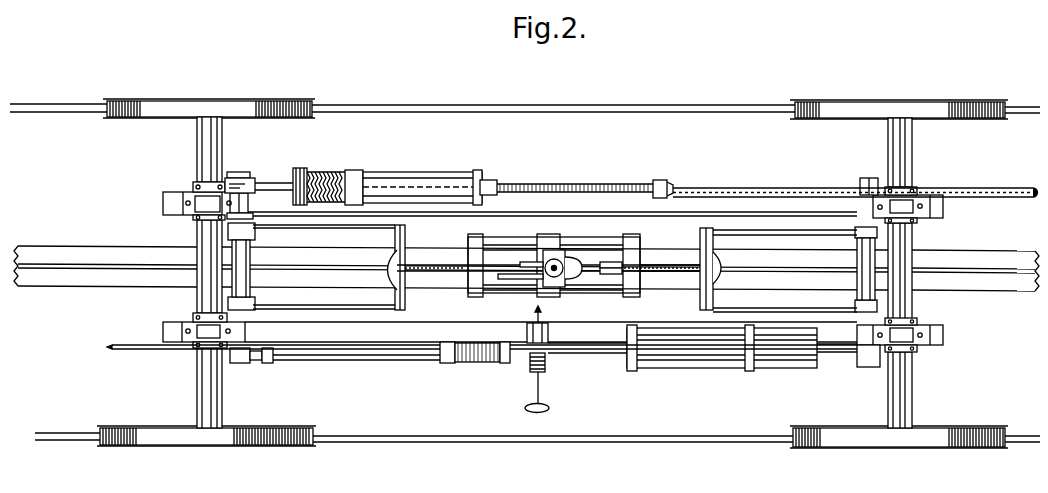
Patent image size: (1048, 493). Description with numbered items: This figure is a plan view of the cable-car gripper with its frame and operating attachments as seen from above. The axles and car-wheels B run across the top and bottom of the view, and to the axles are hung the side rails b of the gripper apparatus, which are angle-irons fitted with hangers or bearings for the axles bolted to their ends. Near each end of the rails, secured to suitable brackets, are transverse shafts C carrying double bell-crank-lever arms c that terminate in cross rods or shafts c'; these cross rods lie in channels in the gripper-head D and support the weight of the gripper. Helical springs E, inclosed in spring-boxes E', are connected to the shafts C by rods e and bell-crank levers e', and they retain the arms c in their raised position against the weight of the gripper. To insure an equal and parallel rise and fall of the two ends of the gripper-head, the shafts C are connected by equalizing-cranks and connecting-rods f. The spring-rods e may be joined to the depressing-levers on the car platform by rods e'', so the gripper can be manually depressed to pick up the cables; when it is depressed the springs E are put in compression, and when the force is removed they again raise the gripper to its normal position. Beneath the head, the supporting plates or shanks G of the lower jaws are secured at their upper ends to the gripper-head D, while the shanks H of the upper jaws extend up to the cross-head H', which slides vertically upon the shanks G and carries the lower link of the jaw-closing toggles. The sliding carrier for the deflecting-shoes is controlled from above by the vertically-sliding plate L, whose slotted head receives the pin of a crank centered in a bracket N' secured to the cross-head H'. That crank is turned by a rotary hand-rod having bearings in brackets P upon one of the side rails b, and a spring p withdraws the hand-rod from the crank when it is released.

The main cylinder / track beam A is at (526, 277).
The axles and car-wheels B is at (838, 464).
The side rails b is at (553, 274).
The transverse shafts C is at (240, 176).
The double bell-crank-lever arms c is at (552, 265).
The cross rods or shafts c' is at (404, 267).
The spring-rods e is at (335, 278).
The bell-crank levers e' is at (239, 172).
The rods e'' is at (547, 272).
The helical springs E is at (328, 177).
The spring-boxes E' is at (590, 268).
The supporting plates or shanks G is at (422, 274).
The supporting plates or shanks H is at (556, 268).
The cross-head H' is at (571, 276).
The vertically-sliding plate L is at (520, 281).
The gripper-head D is at (670, 277).
The bracket N' is at (528, 317).
The spring p is at (545, 363).
The brackets P is at (540, 374).
The foot o is at (536, 392).
The connecting-rods f is at (648, 359).